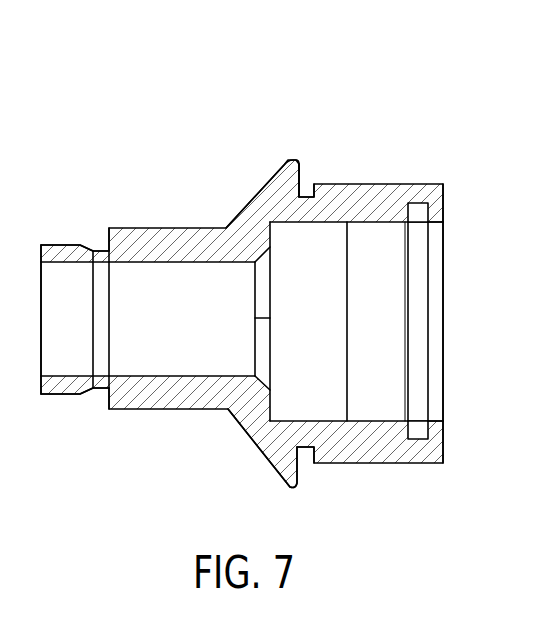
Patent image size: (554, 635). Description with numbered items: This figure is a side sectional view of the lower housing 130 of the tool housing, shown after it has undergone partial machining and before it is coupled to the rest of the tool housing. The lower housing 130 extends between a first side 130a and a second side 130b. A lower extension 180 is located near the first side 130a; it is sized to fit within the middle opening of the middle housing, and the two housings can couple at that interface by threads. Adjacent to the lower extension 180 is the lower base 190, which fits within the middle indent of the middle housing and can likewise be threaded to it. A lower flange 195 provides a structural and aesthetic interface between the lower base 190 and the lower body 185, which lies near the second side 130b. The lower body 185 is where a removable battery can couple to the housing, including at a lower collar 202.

The lower housing 130 is at (368, 124).
The first side 130a is at (63, 245).
The second side 130b is at (437, 383).
The lower extension 180 is at (52, 378).
The lower body 185 is at (423, 184).
The lower base 190 is at (172, 402).
The lower flange 195 is at (275, 458).
The lower collar 202 is at (303, 450).